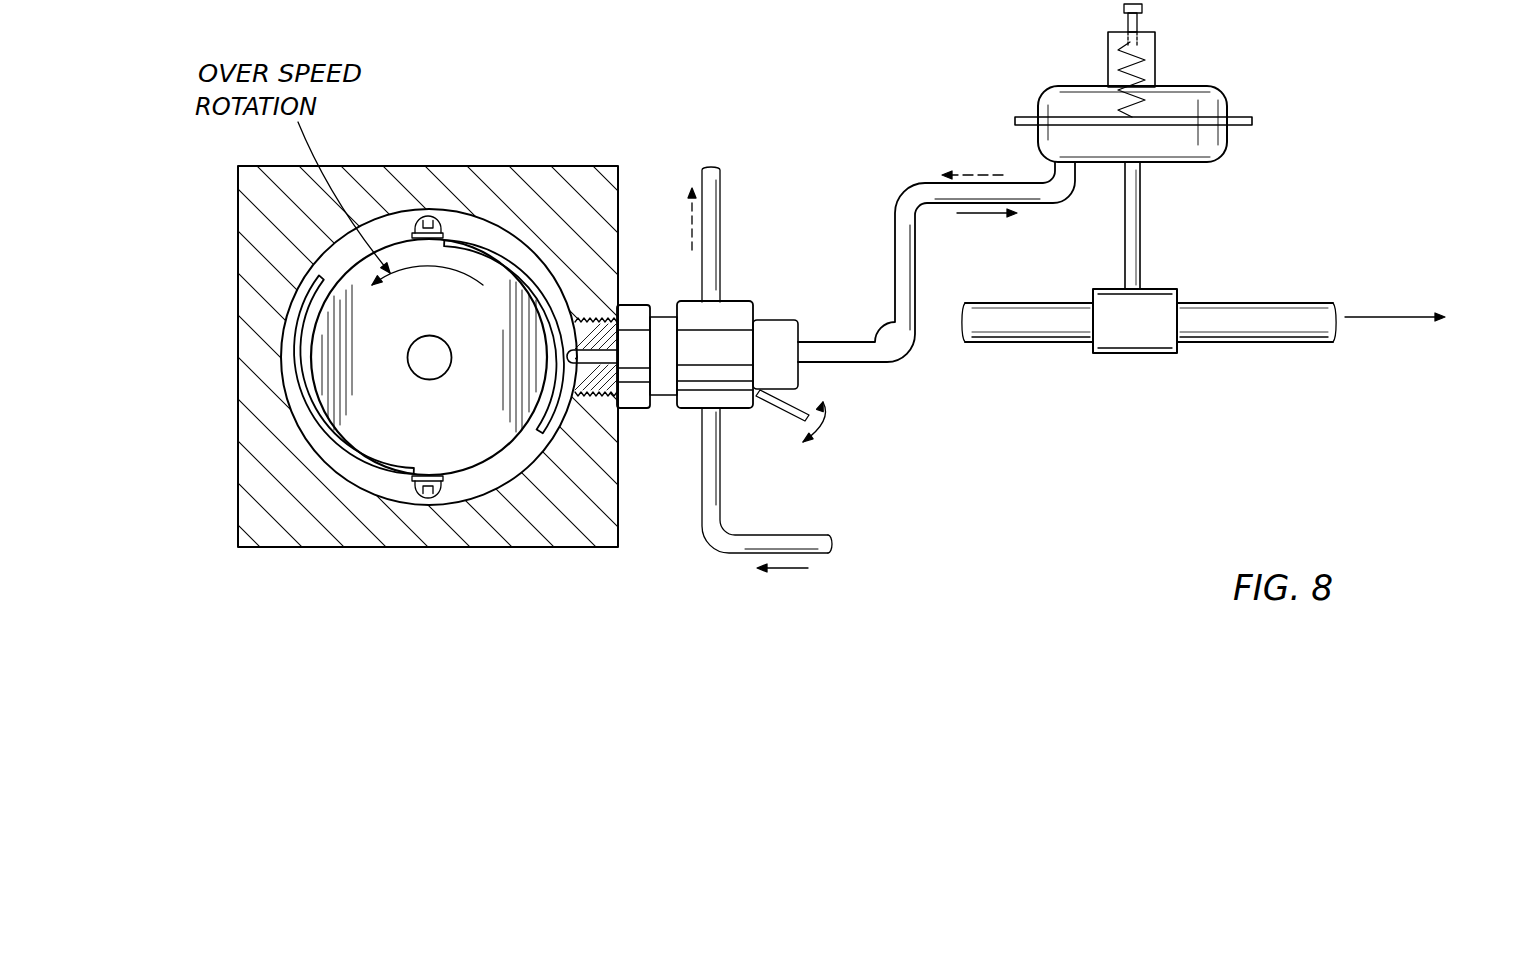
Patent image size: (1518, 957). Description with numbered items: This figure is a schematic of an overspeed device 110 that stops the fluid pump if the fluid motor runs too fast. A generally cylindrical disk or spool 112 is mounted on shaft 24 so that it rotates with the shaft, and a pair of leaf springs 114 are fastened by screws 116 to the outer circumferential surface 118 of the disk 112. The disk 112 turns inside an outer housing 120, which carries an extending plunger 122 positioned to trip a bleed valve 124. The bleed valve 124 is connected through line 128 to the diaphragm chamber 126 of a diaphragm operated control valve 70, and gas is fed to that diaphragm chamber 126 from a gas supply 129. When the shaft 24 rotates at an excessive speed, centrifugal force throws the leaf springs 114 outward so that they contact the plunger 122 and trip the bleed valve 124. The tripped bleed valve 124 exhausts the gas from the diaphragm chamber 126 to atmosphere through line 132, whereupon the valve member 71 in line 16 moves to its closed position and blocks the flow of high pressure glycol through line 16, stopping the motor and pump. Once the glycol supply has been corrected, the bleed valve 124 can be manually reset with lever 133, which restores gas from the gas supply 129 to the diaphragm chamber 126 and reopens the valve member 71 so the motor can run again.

The line 16 is at (1238, 303).
The shaft 24 is at (428, 358).
The diaphragm operated control valve 70 is at (1200, 85).
The valve member 71 is at (1148, 353).
The overspeed device 110 is at (514, 367).
The disk or spool 112 is at (492, 273).
The leaf springs 114 is at (548, 303).
The screws 116 is at (443, 225).
The outer circumferential surface 118 is at (485, 462).
The outer housing 120 is at (592, 185).
The plunger 122 is at (618, 423).
The bleed valve 124 is at (742, 313).
The diaphragm chamber 126 is at (1222, 143).
The line 128 is at (895, 279).
The gas supply 129 is at (798, 534).
The line 132 is at (712, 224).
The lever 133 is at (782, 412).